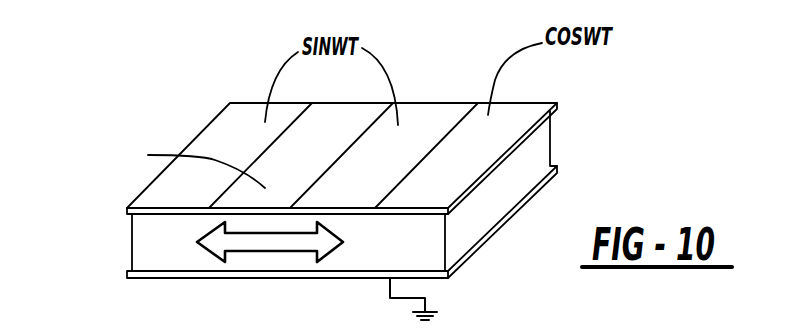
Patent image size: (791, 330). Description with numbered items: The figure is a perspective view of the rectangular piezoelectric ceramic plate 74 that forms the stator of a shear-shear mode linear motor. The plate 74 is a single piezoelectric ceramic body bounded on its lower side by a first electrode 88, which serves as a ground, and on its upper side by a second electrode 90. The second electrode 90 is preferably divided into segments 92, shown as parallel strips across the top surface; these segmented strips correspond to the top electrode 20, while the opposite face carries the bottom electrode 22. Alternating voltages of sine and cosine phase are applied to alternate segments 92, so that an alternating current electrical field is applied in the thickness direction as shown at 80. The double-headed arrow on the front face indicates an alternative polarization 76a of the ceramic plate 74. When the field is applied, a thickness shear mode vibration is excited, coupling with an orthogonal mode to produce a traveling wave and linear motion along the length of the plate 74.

The top electrode 20 is at (422, 113).
The segments 92 is at (223, 135).
The second electrode 90 is at (127, 212).
The rectangular piezoelectric ceramic plate 74 is at (614, 93).
The bottom electrode 22 is at (518, 213).
The first electrode 88 is at (153, 278).
The alternative polarization 76a is at (270, 252).
The alternating current electrical field in the thickness direction 80 is at (92, 133).